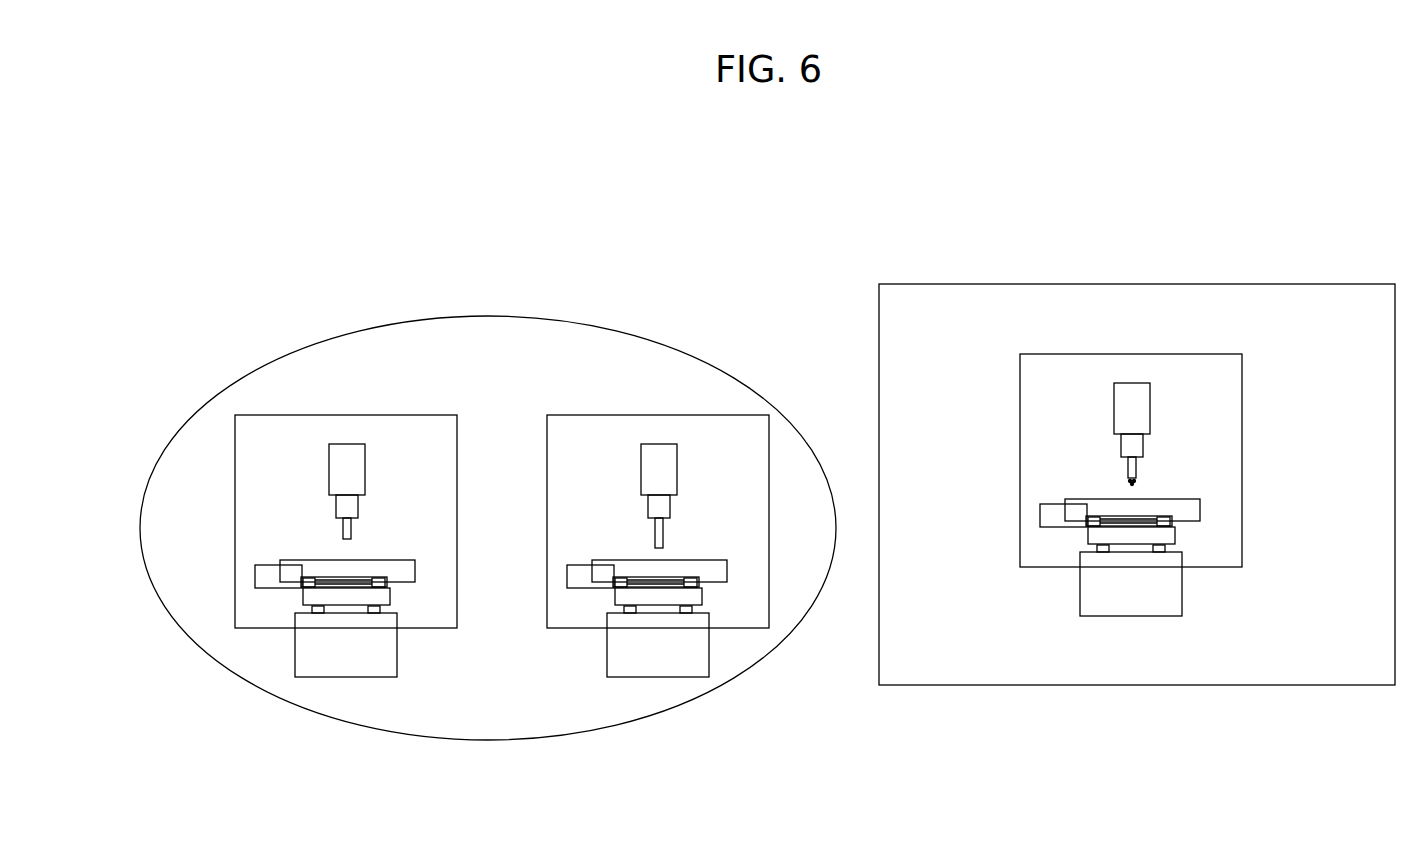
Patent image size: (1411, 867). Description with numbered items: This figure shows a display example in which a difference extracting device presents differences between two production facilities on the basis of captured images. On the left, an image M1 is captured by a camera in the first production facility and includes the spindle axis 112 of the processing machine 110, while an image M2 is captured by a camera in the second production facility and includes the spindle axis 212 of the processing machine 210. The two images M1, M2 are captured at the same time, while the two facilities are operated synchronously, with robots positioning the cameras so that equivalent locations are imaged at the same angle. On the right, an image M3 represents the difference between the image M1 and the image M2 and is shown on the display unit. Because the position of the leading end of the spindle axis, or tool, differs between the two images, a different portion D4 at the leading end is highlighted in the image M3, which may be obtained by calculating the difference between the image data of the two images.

The processing machine 110 is at (261, 628).
The spindle axis 112 is at (352, 527).
The processing machine 210 is at (741, 629).
The spindle axis 212 is at (666, 531).
The image M1 is at (347, 388).
The image M2 is at (656, 386).
The image M3 is at (1130, 278).
The different portion D4 is at (1110, 480).